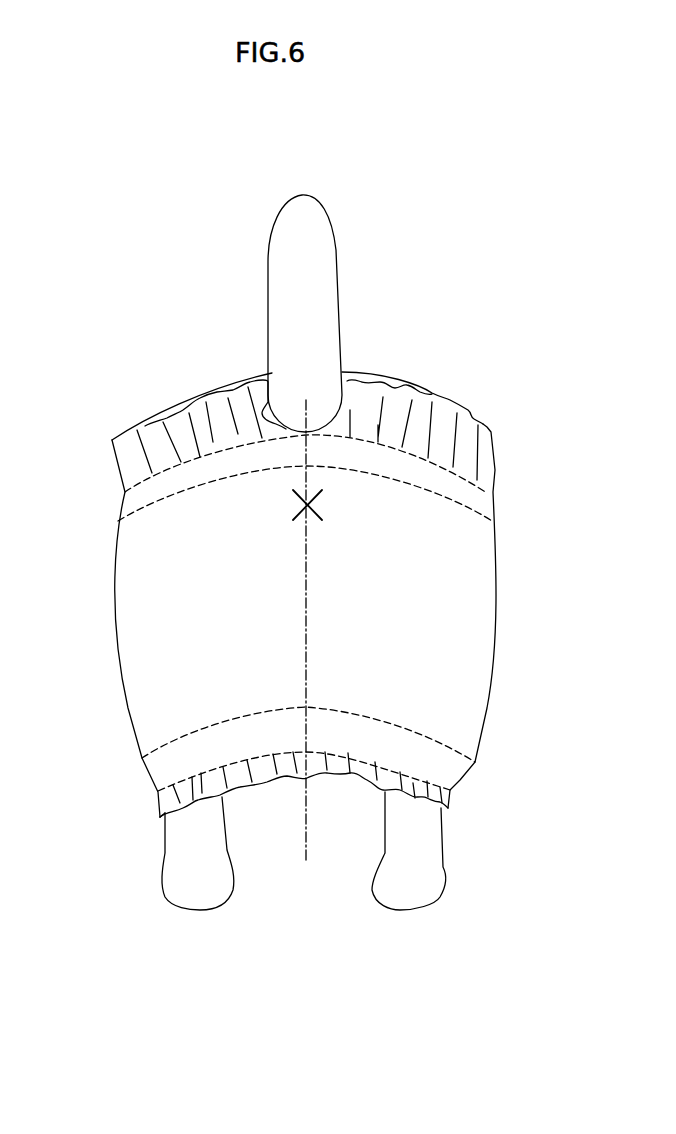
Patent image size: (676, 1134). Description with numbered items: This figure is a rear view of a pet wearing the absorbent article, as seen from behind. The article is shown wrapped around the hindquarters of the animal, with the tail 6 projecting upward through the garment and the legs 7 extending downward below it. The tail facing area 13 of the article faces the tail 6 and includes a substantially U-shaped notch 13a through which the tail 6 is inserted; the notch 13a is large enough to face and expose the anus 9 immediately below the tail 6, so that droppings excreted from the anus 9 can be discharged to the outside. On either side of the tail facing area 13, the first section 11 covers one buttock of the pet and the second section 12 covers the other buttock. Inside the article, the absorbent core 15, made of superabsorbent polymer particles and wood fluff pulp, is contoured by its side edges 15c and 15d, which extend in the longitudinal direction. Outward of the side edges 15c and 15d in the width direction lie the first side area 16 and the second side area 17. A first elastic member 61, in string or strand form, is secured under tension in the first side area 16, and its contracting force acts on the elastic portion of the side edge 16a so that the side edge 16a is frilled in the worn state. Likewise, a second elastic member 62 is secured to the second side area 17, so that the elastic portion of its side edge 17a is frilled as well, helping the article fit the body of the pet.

The tail 6 is at (312, 243).
The legs 7 is at (222, 880).
The anus 9 is at (322, 504).
The first section 11 is at (157, 653).
The second section 12 is at (465, 672).
The tail facing area 13 is at (266, 417).
The notch 13a is at (348, 424).
The absorbent core 15 is at (467, 568).
The side edge of absorbent core 15c is at (452, 744).
The side edge of absorbent core 15d is at (473, 511).
The first side area 16 is at (413, 795).
The side edge of first side area 16a is at (330, 770).
The second side area 17 is at (444, 423).
The side edge of second side area 17a is at (405, 383).
The first elastic member 61 is at (192, 805).
The second elastic member 62 is at (182, 447).